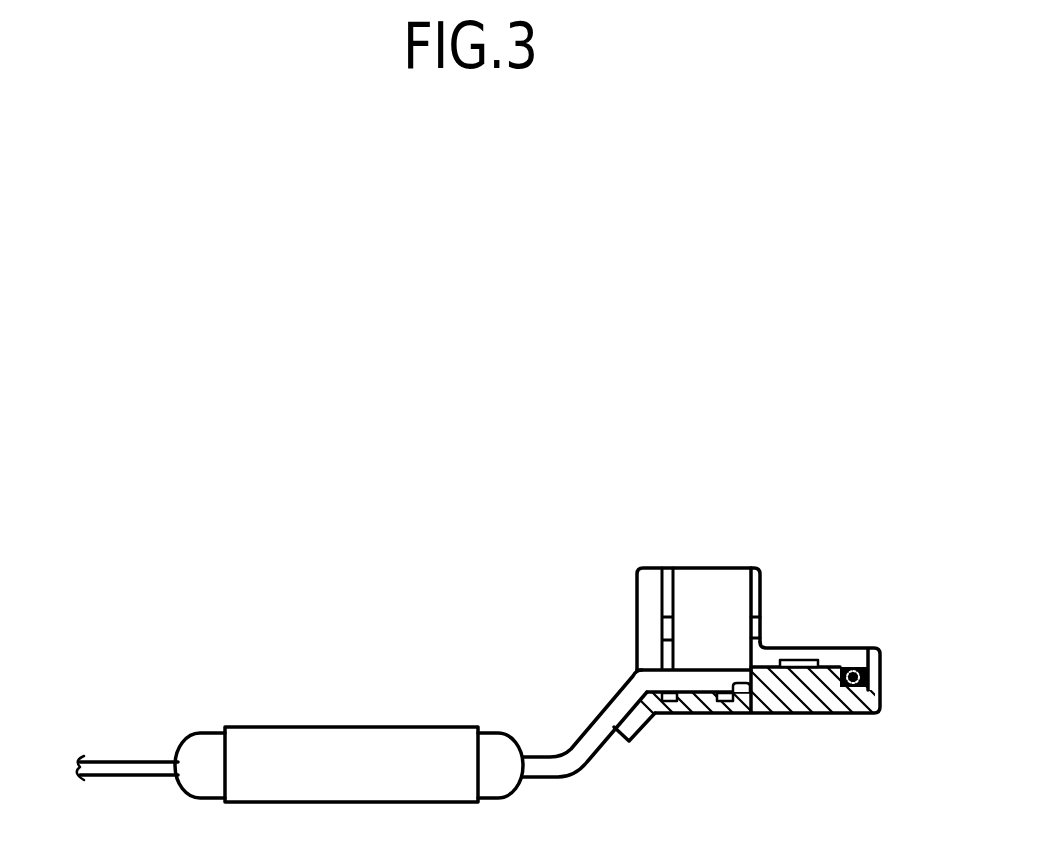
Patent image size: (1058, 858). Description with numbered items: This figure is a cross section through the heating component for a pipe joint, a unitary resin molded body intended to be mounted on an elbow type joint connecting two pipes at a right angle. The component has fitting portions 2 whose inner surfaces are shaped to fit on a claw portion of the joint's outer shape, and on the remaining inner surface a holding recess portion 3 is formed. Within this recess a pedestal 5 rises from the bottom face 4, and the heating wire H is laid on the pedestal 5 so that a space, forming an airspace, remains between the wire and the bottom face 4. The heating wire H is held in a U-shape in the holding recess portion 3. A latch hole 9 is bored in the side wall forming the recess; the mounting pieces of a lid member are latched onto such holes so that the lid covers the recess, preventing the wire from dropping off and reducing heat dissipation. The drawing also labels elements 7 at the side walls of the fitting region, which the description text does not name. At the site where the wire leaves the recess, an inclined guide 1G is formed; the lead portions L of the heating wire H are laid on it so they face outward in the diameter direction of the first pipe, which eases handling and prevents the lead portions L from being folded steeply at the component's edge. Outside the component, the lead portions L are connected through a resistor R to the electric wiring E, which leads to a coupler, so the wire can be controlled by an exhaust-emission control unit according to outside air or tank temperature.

The inclined guide 1G is at (645, 728).
The fitting portion 2 is at (710, 578).
The holding recess portion 3 is at (866, 649).
The bottom face 4 is at (750, 703).
The pedestal 5 is at (715, 690).
The terminals 7 is at (662, 627).
The latch hole 9 is at (792, 660).
The heating wire H is at (650, 678).
The resistor R is at (378, 728).
The electric wiring E is at (134, 760).
The lead portion L is at (578, 745).